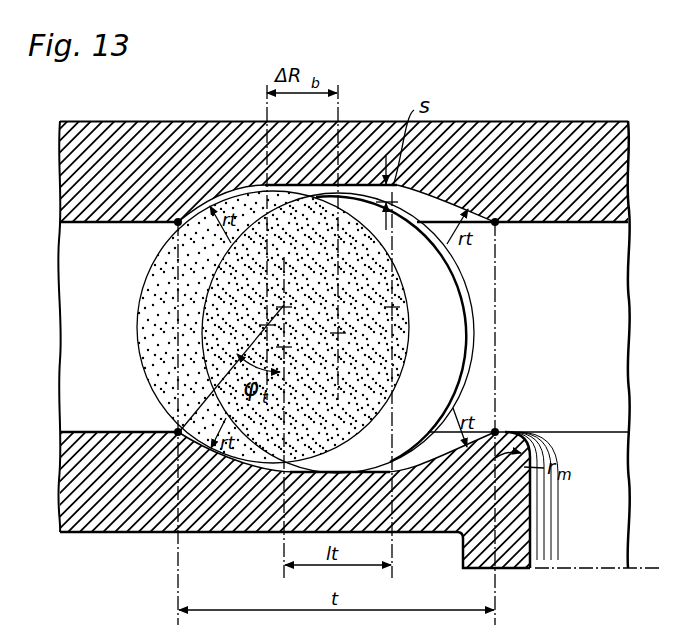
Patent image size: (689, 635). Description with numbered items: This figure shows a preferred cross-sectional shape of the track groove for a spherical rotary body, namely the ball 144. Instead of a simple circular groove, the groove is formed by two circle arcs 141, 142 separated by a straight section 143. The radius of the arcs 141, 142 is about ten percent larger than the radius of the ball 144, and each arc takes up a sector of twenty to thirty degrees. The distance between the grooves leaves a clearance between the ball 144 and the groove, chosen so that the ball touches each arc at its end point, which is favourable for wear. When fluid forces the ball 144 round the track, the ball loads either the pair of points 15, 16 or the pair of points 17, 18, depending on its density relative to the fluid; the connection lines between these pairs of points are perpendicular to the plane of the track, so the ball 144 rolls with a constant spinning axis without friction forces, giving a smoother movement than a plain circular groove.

The point of contact 15 is at (496, 221).
The point of contact 16 is at (506, 431).
The point of contact 17 is at (178, 221).
The point of contact 18 is at (178, 433).
The circle arc 141 is at (240, 184).
The circle arc 142 is at (449, 197).
The straight section 143 is at (352, 184).
The ball 144 is at (475, 316).